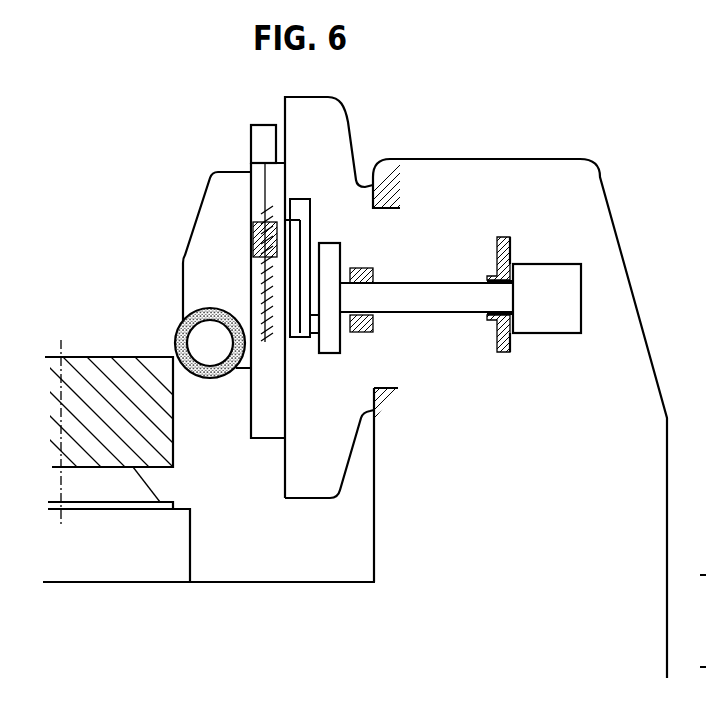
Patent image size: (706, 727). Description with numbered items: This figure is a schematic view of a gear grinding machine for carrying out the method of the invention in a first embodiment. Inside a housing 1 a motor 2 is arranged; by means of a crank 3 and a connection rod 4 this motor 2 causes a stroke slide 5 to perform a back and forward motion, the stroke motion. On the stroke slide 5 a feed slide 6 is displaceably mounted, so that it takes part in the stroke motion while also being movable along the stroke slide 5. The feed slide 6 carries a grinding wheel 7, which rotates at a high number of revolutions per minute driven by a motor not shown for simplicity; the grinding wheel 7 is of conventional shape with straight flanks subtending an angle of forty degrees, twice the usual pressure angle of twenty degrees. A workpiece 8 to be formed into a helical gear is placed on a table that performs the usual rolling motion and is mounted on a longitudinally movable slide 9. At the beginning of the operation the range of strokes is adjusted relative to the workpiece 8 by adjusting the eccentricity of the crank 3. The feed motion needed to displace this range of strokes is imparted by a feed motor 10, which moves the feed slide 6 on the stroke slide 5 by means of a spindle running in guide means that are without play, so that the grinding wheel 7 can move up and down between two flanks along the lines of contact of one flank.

The housing 1 is at (628, 369).
The motor 2 is at (572, 283).
The crank 3 is at (315, 333).
The connection rod 4 is at (305, 232).
The stroke slide 5 is at (264, 428).
The feed slide 6 is at (208, 238).
The grinding wheel 7 is at (178, 333).
The workpiece 8 is at (82, 368).
The longitudinally movable slide 9 is at (175, 540).
The feed motor 10 is at (258, 130).